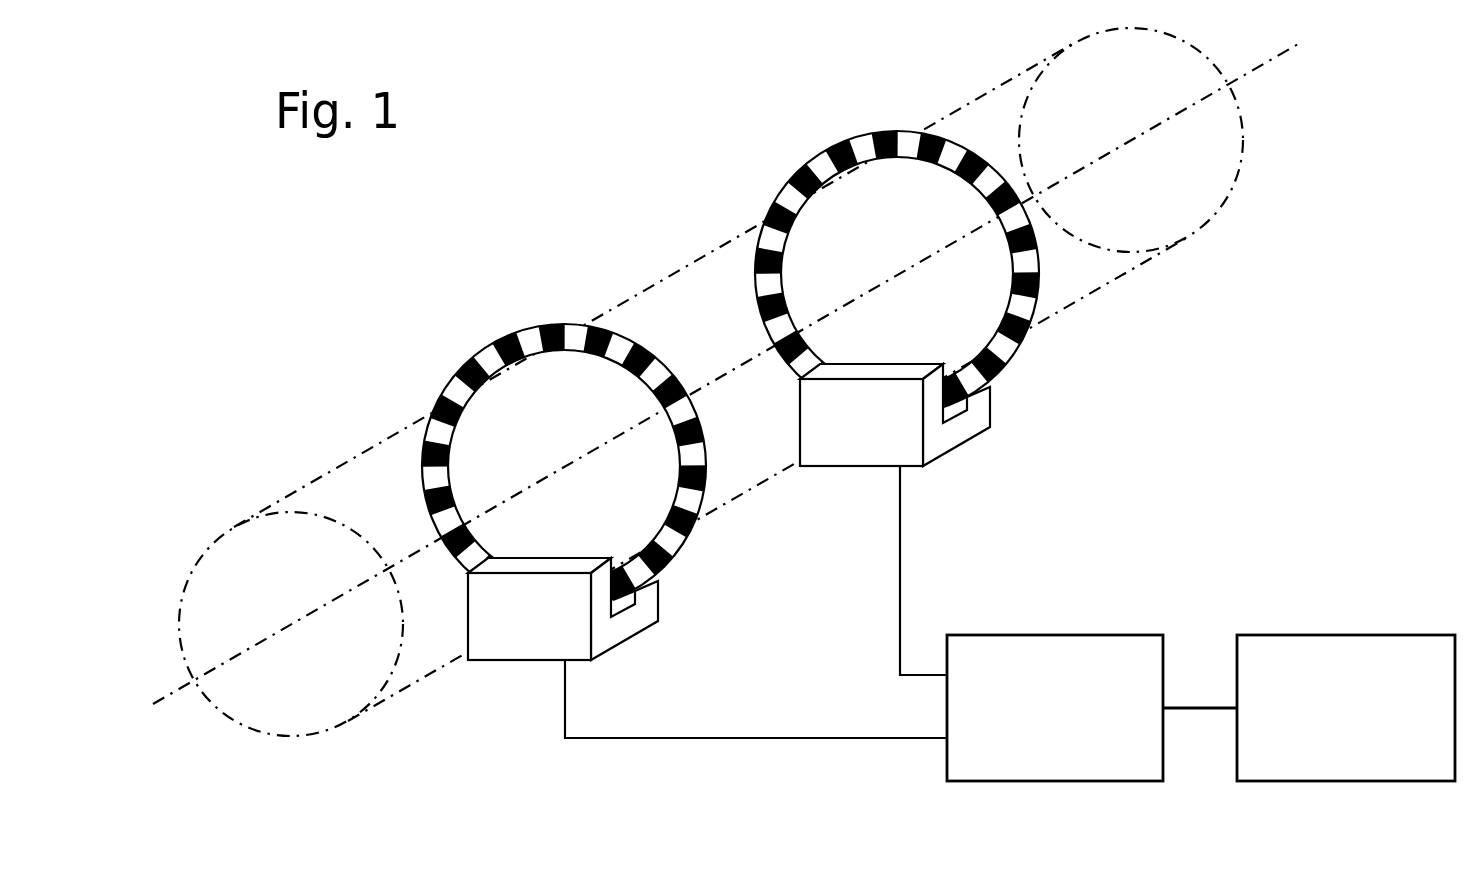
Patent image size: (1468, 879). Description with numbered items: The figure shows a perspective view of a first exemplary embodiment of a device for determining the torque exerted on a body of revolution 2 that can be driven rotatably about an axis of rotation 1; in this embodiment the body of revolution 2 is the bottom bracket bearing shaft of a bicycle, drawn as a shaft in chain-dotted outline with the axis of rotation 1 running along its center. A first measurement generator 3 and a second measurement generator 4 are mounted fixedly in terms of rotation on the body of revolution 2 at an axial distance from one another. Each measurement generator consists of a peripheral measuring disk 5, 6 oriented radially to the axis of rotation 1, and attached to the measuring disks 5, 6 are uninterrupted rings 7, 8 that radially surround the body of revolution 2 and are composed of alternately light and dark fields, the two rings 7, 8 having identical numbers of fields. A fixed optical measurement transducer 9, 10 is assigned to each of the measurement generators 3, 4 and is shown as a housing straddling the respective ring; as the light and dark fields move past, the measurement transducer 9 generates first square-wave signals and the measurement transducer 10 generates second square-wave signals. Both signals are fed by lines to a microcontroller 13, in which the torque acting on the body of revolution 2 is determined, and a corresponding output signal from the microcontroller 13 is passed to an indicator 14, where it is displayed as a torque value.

The axis of rotation 1 is at (1255, 68).
The body of revolution 2 is at (1083, 268).
The first measurement generator 3 is at (497, 322).
The second measurement generator 4 is at (822, 130).
The measuring disk 5 is at (672, 557).
The measuring disk 6 is at (1010, 353).
The ring 7 is at (617, 467).
The ring 8 is at (943, 274).
The measurement transducer 9 is at (603, 632).
The measurement transducer 10 is at (937, 437).
The microcontroller 13 is at (1083, 652).
The indicator 14 is at (1380, 652).